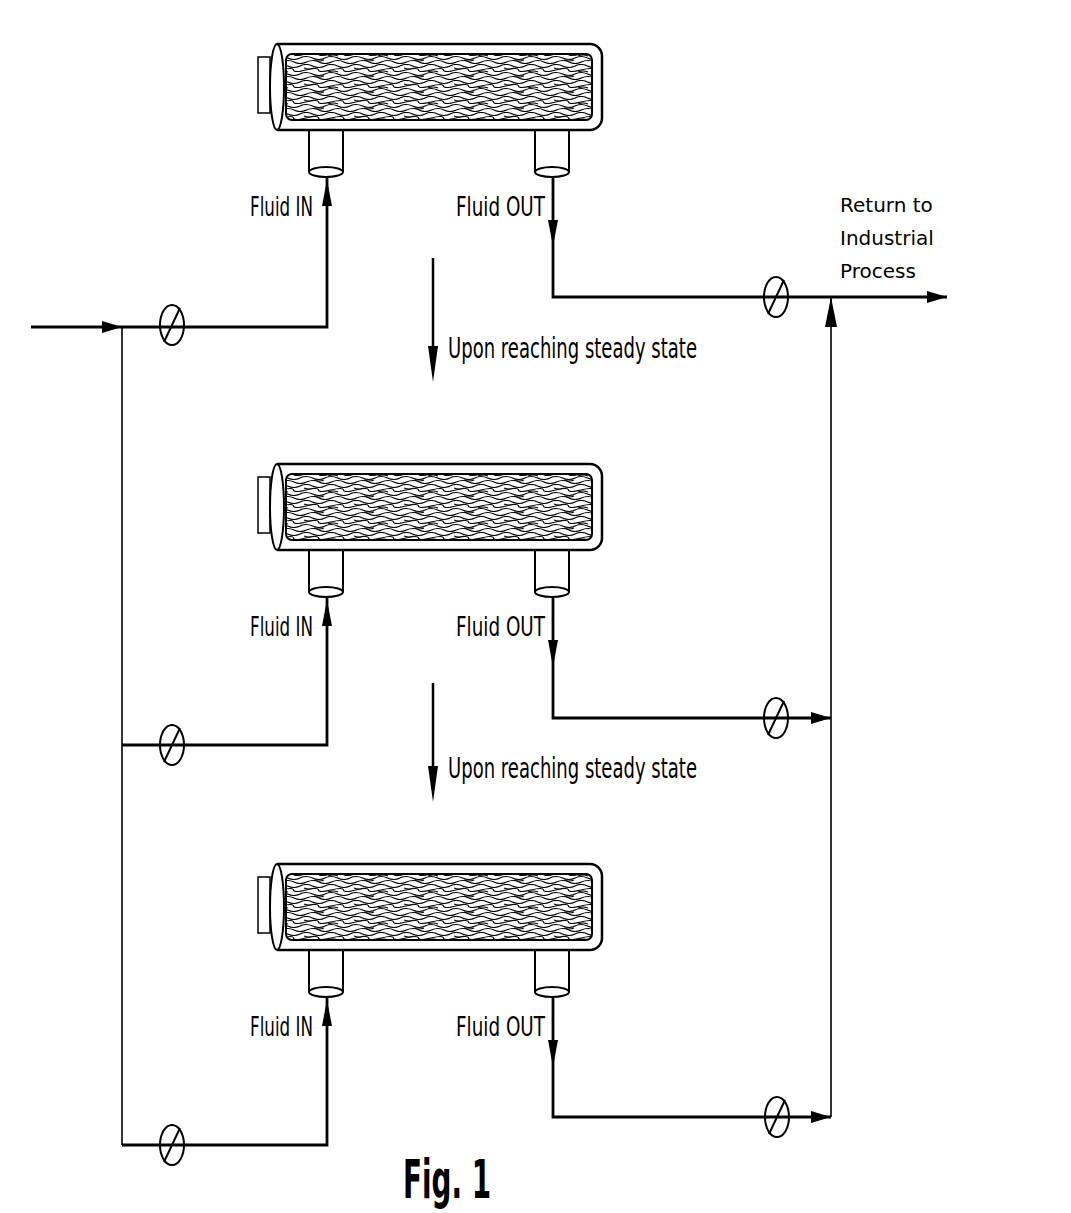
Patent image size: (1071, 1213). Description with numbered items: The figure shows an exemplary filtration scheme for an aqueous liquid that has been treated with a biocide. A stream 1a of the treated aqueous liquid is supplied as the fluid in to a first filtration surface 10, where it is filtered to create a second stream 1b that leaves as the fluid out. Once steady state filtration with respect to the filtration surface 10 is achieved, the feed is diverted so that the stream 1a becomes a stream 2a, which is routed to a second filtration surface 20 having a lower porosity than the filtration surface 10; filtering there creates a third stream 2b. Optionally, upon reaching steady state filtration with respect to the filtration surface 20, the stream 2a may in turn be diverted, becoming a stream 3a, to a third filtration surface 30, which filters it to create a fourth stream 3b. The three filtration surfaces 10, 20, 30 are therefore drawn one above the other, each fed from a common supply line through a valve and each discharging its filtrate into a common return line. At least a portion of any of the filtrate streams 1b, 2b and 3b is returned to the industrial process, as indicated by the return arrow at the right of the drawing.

The filtration surface 10 is at (604, 84).
The filtration surface 20 is at (462, 507).
The filtration surface 30 is at (462, 907).
The stream 1a is at (343, 155).
The second stream 1b is at (569, 155).
The stream 2a is at (351, 588).
The third stream 2b is at (579, 589).
The stream 3a is at (351, 988).
The fourth stream 3b is at (579, 989).